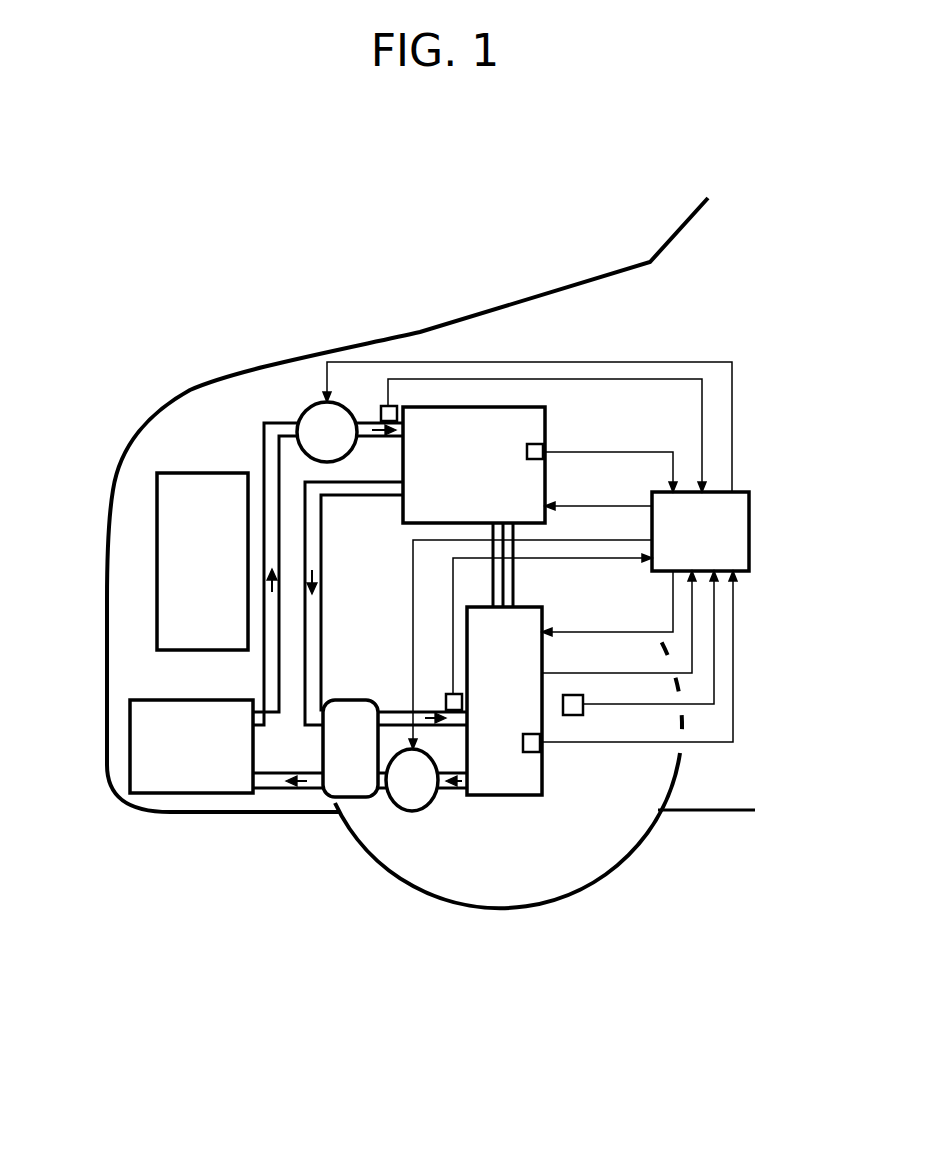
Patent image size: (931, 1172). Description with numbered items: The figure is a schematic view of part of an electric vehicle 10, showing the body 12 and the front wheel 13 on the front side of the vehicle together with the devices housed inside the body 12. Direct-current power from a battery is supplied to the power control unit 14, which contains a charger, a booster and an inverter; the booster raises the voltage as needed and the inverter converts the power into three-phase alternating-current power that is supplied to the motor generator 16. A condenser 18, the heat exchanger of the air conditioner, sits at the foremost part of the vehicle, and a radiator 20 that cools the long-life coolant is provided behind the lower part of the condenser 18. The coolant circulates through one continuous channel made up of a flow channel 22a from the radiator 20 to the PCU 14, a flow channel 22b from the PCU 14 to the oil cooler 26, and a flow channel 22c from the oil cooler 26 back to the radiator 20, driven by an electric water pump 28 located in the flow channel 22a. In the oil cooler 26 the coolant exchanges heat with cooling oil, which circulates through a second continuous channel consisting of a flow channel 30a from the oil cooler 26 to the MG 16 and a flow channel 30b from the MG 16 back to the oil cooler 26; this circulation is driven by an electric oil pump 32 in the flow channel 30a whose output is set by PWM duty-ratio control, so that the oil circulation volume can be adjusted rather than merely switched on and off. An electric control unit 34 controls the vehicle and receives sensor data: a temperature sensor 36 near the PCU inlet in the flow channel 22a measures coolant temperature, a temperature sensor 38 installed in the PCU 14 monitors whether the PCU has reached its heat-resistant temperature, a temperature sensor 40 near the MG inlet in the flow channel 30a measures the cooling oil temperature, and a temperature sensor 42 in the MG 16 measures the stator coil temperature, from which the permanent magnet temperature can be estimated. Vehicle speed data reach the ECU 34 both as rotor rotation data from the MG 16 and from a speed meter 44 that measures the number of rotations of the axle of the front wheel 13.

The electric vehicle 10 is at (158, 256).
The body 12 is at (602, 277).
The front wheel 13 is at (600, 882).
The power control unit 14 is at (483, 407).
The motor generator 16 is at (517, 798).
The condenser 18 is at (157, 498).
The radiator 20 is at (215, 797).
The flow channel 22a is at (275, 440).
The flow channel 22b is at (312, 498).
The flow channel 22c is at (270, 797).
The oil cooler 26 is at (357, 795).
The water pump 28 is at (302, 409).
The flow channel 30a is at (447, 793).
The flow channel 30b is at (378, 797).
The oil pump 32 is at (400, 811).
The electric control unit 34 is at (750, 517).
The temperature sensor 36 is at (385, 405).
The temperature sensor 38 is at (530, 444).
The temperature sensor 40 is at (475, 790).
The temperature sensor 42 is at (532, 753).
The speed meter 44 is at (572, 717).